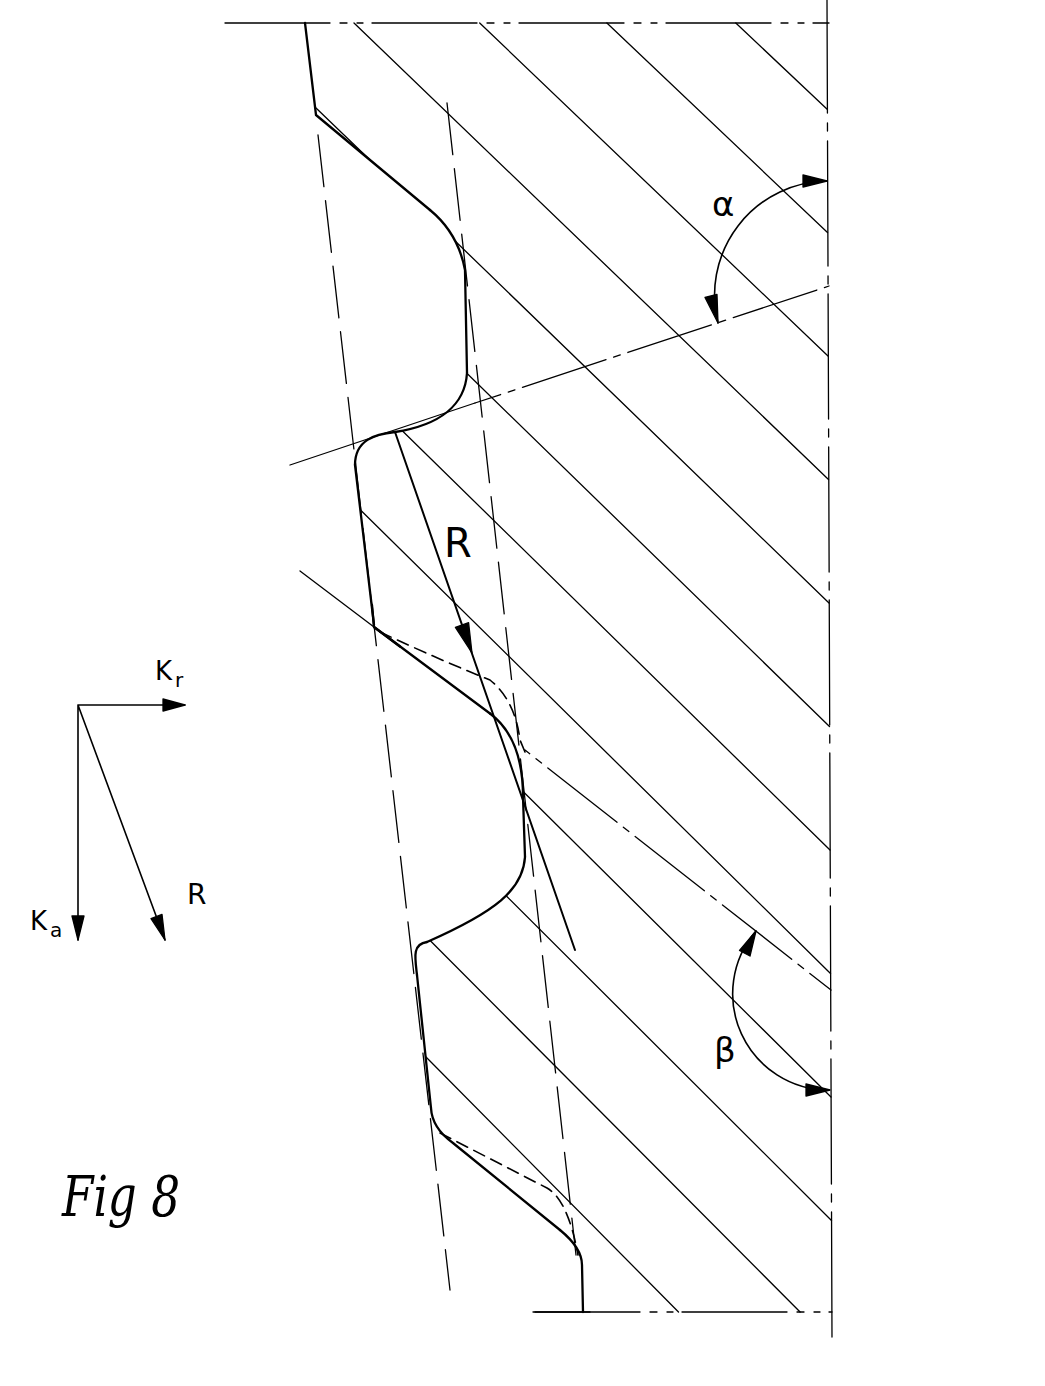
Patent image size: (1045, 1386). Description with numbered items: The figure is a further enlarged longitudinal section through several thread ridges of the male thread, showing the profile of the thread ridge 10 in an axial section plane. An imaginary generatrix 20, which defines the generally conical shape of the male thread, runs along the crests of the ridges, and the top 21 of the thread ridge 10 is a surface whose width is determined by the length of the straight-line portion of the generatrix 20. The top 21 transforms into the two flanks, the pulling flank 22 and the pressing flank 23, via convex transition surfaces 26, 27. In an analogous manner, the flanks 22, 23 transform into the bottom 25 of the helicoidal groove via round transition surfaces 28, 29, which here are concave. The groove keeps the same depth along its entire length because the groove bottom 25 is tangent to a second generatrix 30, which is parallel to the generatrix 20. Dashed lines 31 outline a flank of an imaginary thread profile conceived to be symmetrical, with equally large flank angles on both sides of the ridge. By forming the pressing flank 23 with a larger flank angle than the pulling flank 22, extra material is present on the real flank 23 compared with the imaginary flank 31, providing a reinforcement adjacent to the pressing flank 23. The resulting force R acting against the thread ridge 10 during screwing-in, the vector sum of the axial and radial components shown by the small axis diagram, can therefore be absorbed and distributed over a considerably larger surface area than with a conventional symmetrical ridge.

The male thread ridge 10 is at (462, 1088).
The generatrix 20 is at (328, 222).
The top 21 is at (422, 1045).
The pulling flank 22 is at (408, 427).
The pressing flank 23 is at (442, 683).
The bottom 25 is at (464, 323).
The convex transition surface 26 is at (360, 449).
The convex transition surface 27 is at (375, 630).
The round transition surface 28 is at (506, 900).
The round transition surface 29 is at (513, 748).
The generatrix 30 is at (456, 174).
The imaginary flank 31 is at (510, 1168).